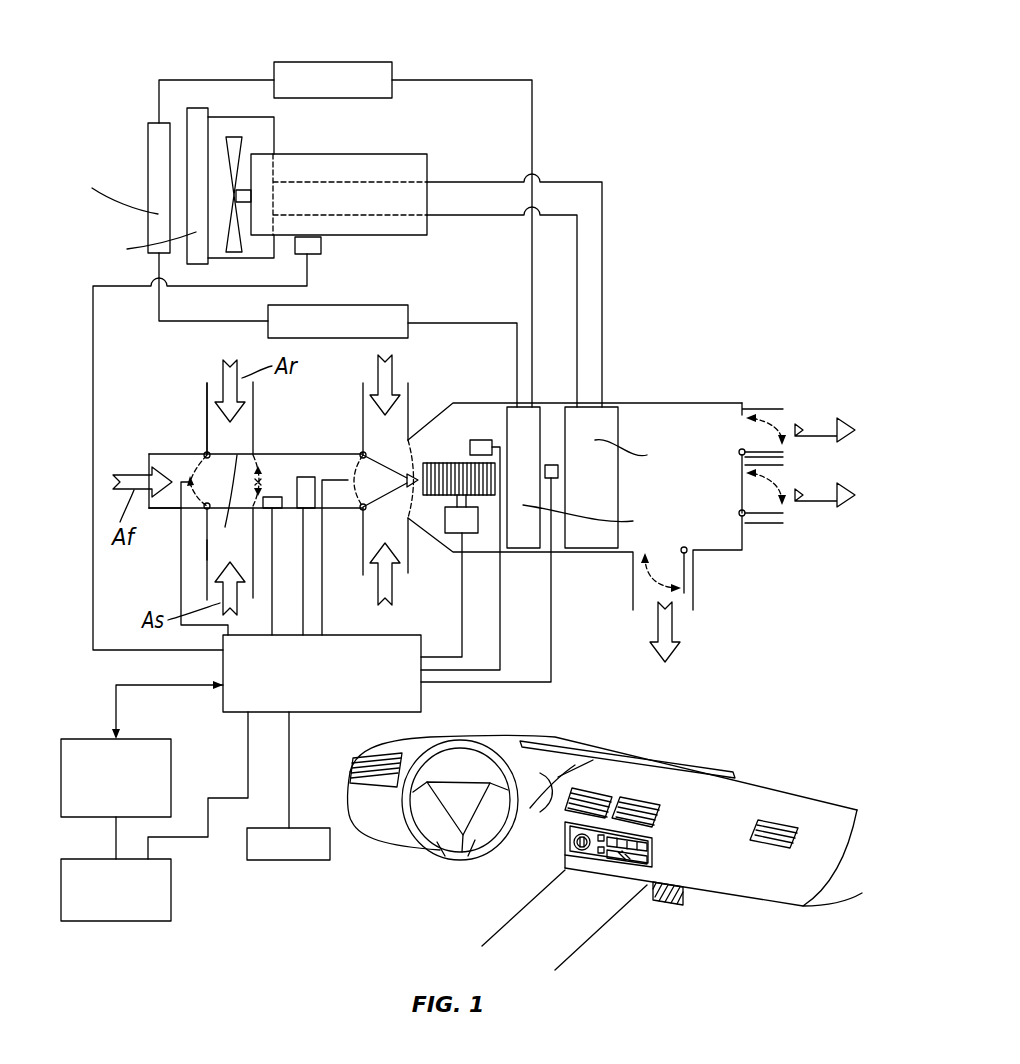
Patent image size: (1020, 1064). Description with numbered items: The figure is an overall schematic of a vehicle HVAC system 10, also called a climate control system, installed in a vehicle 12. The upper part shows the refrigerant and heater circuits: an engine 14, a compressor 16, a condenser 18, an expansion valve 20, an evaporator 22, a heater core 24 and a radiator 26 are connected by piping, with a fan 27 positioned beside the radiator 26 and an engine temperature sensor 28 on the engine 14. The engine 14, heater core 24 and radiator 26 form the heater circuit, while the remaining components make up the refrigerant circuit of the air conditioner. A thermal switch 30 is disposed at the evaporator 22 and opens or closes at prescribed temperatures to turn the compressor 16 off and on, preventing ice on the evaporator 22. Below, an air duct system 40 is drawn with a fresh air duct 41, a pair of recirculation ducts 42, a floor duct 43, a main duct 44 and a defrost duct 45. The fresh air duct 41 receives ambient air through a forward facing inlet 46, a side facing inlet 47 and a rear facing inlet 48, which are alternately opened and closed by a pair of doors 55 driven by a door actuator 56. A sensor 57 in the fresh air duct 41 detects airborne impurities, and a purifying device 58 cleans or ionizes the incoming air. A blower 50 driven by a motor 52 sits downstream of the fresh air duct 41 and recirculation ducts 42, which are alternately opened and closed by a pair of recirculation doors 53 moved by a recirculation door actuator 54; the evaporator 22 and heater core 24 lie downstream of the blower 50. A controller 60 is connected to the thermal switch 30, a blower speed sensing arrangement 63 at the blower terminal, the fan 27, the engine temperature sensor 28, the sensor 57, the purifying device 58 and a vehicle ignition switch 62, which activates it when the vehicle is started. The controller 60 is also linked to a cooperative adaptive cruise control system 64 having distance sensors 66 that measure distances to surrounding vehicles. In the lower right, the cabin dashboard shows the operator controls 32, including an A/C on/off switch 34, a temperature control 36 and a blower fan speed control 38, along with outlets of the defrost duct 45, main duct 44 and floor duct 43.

The vehicle HVAC system 10 is at (721, 369).
The vehicle 12 is at (702, 749).
The engine 14 is at (353, 154).
The compressor 16 is at (334, 62).
The condenser 18 is at (148, 140).
The expansion valve 20 is at (339, 305).
The evaporator 22 is at (507, 425).
The heater core 24 is at (618, 430).
The radiator 26 is at (197, 108).
The fan 27 is at (237, 135).
The engine temperature sensor 28 is at (322, 246).
The thermal switch 30 is at (550, 465).
The operator controls 32 is at (611, 894).
The A/C on/off switch 34 is at (600, 858).
The temperature control 36 is at (623, 857).
The blower fan speed control 38 is at (560, 847).
The air duct system 40 is at (436, 390).
The fresh air duct 41 is at (176, 418).
The recirculation ducts 42 is at (400, 393).
The floor duct 43 is at (692, 568).
The main duct 44 is at (778, 512).
The defrost duct 45 is at (757, 432).
The forward facing inlet 46 is at (165, 510).
The side facing inlet 47 is at (207, 553).
The rear facing inlet 48 is at (207, 420).
The blower 50 is at (482, 497).
The motor 52 is at (470, 533).
The recirculation doors 53 is at (407, 476).
The recirculation door actuator 54 is at (348, 470).
The doors 55 is at (226, 505).
The door actuator 56 is at (188, 470).
The sensor 57 is at (277, 497).
The purifying device 58 is at (306, 477).
The controller 60 is at (421, 700).
The vehicle ignition switch 62 is at (330, 845).
The blower speed sensing arrangement 63 is at (478, 440).
The cruise control system 64 is at (171, 778).
The distance sensors 66 is at (171, 885).